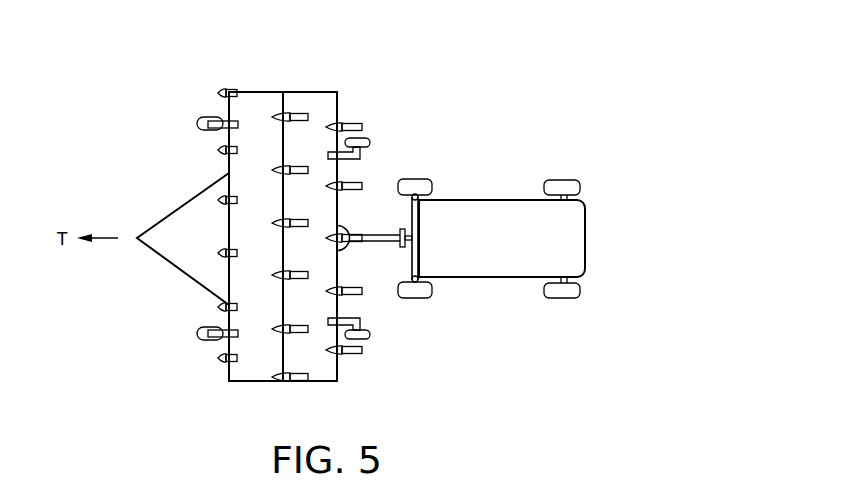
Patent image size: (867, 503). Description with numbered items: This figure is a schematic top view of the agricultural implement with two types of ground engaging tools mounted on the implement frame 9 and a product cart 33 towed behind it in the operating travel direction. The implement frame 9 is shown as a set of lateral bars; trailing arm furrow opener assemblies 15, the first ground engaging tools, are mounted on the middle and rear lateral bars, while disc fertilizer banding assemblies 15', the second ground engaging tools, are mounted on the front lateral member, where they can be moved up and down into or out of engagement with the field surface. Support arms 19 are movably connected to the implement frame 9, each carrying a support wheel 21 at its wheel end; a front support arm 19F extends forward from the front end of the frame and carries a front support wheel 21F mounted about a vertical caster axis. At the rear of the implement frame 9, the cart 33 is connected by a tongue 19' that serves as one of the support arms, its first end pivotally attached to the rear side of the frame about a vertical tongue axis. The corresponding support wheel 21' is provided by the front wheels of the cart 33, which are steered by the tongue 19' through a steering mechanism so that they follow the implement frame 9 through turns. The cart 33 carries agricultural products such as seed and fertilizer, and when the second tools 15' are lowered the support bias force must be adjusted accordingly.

The implement frame 9 is at (338, 92).
The trailing arm furrow opener assemblies 15 is at (337, 268).
The disc fertilizer banding assemblies 15' is at (191, 225).
The support arm 19 is at (373, 318).
The front support arm 19F is at (237, 120).
The tongue 19' is at (384, 187).
The support wheel 21 is at (383, 349).
The front support wheel 21F is at (209, 118).
The front wheels of the cart 21' is at (441, 225).
The cart 33 is at (493, 278).